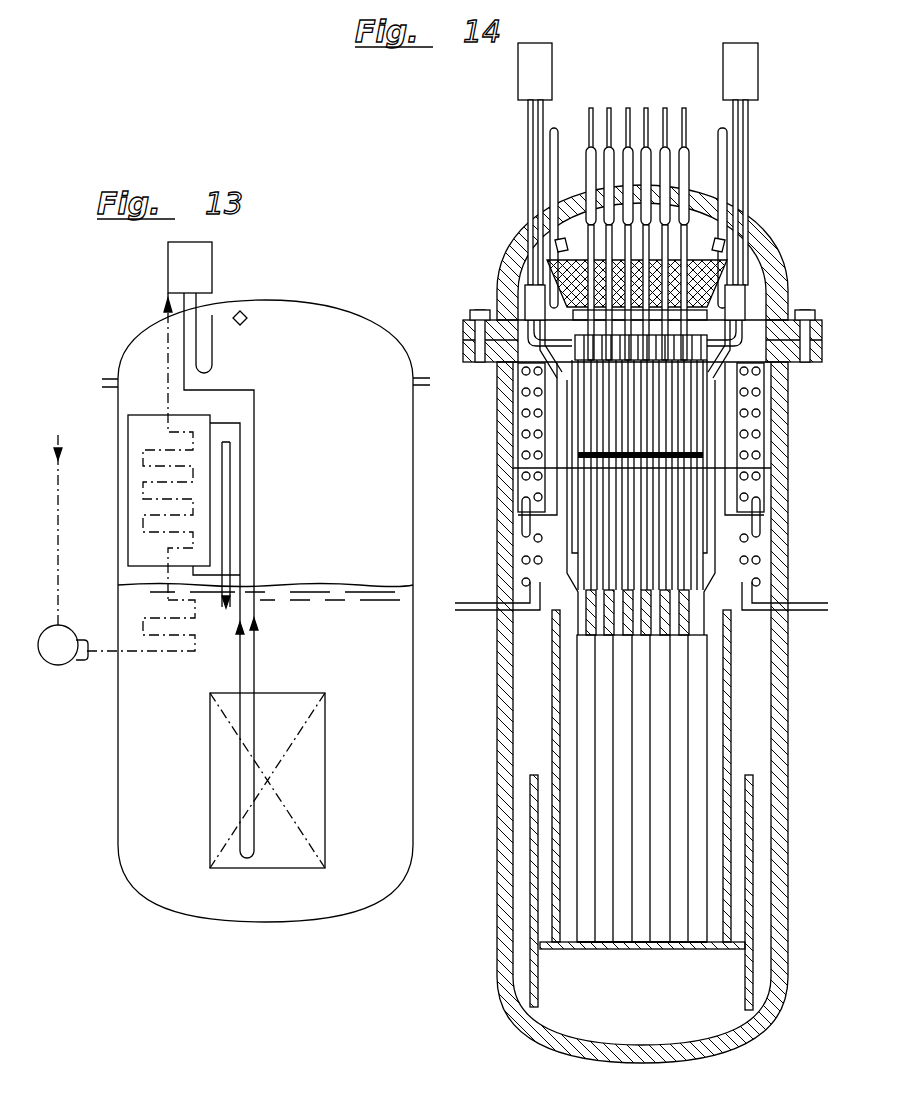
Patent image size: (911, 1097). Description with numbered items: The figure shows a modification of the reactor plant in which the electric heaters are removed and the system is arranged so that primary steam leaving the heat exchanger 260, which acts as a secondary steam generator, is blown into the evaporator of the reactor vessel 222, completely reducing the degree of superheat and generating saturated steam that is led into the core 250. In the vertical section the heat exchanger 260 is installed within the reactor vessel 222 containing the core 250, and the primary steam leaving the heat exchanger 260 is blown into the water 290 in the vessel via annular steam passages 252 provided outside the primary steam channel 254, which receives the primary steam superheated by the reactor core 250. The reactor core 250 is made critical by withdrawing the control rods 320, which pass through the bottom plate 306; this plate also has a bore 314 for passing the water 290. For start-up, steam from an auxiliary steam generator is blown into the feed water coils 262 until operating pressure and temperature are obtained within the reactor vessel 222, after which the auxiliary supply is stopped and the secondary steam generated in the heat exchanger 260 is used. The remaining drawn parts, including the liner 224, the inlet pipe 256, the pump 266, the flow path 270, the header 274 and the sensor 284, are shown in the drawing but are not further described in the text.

In FIG. 13, the reactor vessel 222 is at (415, 640).
In FIG. 14, the reactor vessel 222 is at (788, 680).
In FIG. 13, the vessel liner 224 is at (415, 715).
In FIG. 14, the vessel liner 224 is at (788, 775).
In FIG. 13, the reactor core 250 is at (315, 750).
In FIG. 14, the reactor core 250 is at (622, 822).
In FIG. 13, the annular steam passages 252 is at (238, 658).
In FIG. 14, the annular steam passages 252 is at (693, 483).
In FIG. 13, the primary steam channel 254 is at (256, 650).
In FIG. 14, the coolant inlet pipe 256 is at (548, 335).
In FIG. 13, the heat exchanger 260 is at (138, 472).
In FIG. 14, the heat exchanger 260 is at (755, 402).
In FIG. 13, the feed water coils 262 is at (140, 625).
In FIG. 13, the pump 266 is at (60, 665).
In FIG. 13, the coolant flow path 270 is at (165, 318).
In FIG. 13, the steam drum 274 is at (212, 268).
In FIG. 13, the sensor 284 is at (243, 322).
In FIG. 13, the water 290 is at (333, 600).
In FIG. 14, the bottom plate 306 is at (718, 950).
In FIG. 14, the bore 314 is at (643, 950).
In FIG. 14, the control rods 320 is at (668, 108).